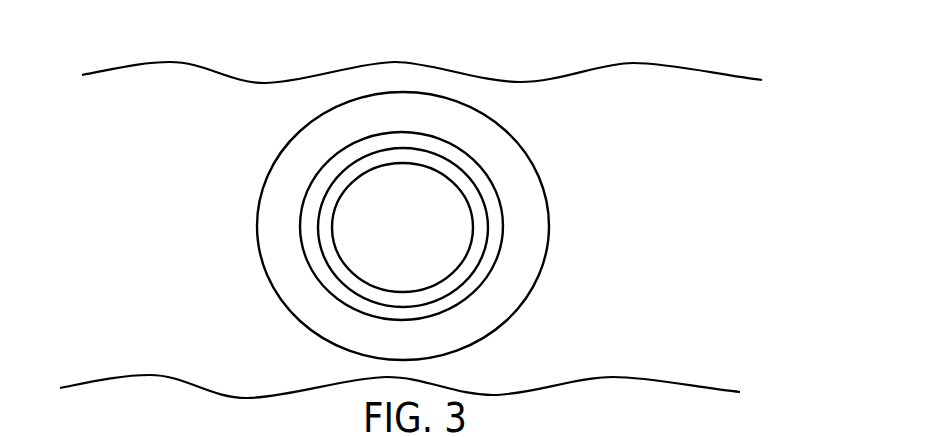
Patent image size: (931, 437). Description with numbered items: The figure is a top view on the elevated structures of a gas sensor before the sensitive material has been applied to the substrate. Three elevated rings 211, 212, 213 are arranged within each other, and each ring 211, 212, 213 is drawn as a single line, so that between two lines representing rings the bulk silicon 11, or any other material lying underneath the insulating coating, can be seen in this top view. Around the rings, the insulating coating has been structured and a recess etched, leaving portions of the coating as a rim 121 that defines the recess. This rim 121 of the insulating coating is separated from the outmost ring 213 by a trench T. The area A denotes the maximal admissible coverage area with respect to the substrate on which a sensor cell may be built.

The bulk silicon 11 is at (443, 203).
The rim of the insulating coating 121 is at (411, 230).
The elevated ring 211 is at (332, 227).
The elevated ring 212 is at (343, 170).
The elevated ring 213 is at (350, 142).
The trench T is at (403, 117).
The area A is at (473, 293).